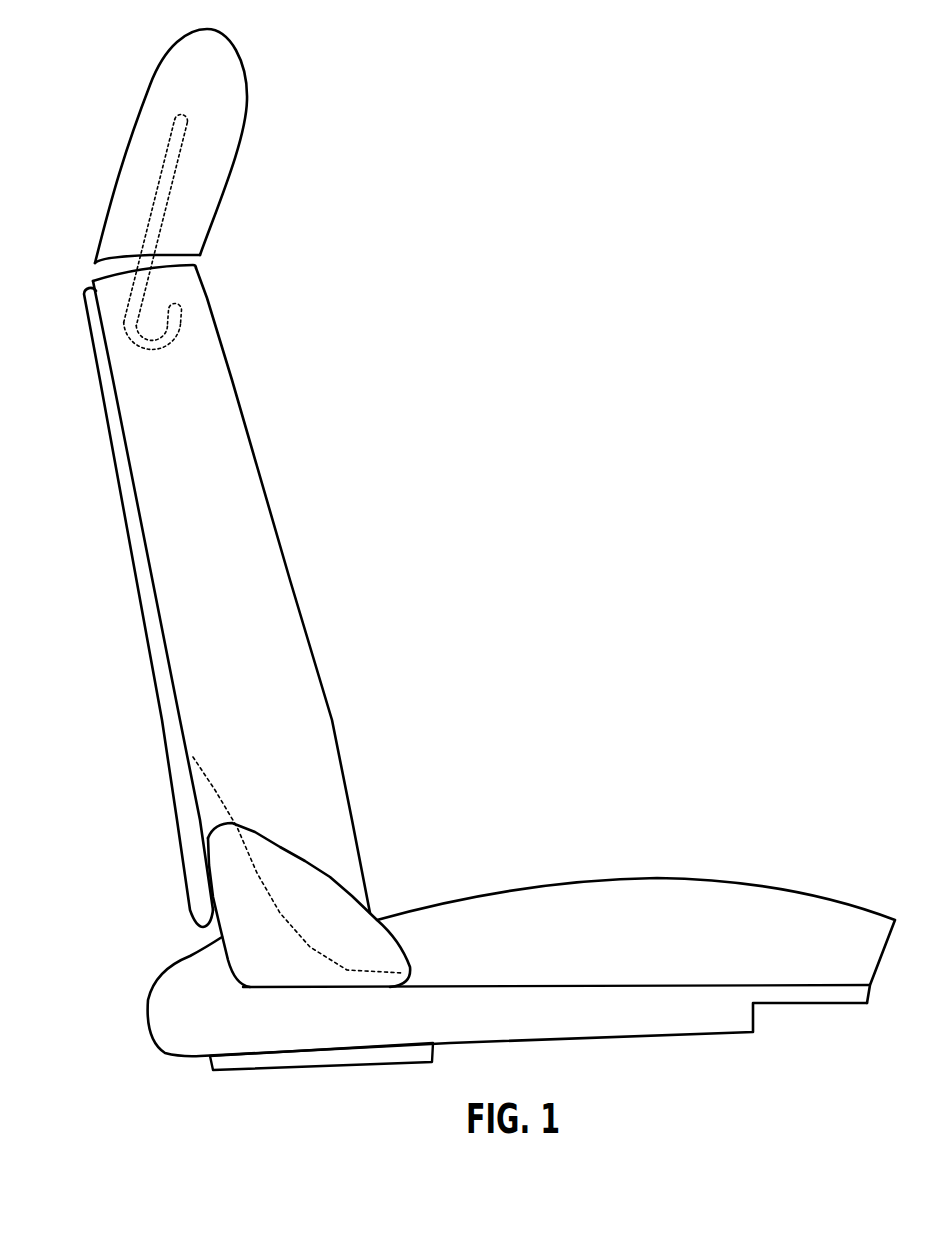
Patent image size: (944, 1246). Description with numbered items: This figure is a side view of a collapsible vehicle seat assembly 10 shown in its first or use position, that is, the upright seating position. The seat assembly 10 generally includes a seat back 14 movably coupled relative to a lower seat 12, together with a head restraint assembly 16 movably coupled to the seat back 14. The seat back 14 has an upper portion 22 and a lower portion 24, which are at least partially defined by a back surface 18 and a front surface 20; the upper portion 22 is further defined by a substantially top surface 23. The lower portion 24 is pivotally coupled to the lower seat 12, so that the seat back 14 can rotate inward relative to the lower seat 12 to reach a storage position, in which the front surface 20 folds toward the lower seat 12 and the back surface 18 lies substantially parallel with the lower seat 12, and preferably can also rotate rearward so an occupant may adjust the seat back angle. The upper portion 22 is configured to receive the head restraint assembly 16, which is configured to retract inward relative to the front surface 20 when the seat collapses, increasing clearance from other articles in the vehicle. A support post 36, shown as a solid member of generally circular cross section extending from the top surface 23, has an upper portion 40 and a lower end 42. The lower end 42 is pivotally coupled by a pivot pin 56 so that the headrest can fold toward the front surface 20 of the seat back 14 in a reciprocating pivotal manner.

The seat assembly 10 is at (531, 511).
The lower seat 12 is at (693, 913).
The seat back 14 is at (246, 577).
The head restraint assembly 16 is at (216, 146).
The back surface 18 is at (140, 587).
The front surface 20 is at (317, 648).
The upper portion 22 is at (248, 281).
The top surface 23 is at (121, 257).
The lower portion 24 is at (403, 840).
The support post 36 is at (169, 237).
The upper portion of support post 40 is at (173, 132).
The lower end of support post 42 is at (123, 341).
The pivot pin 56 is at (179, 309).